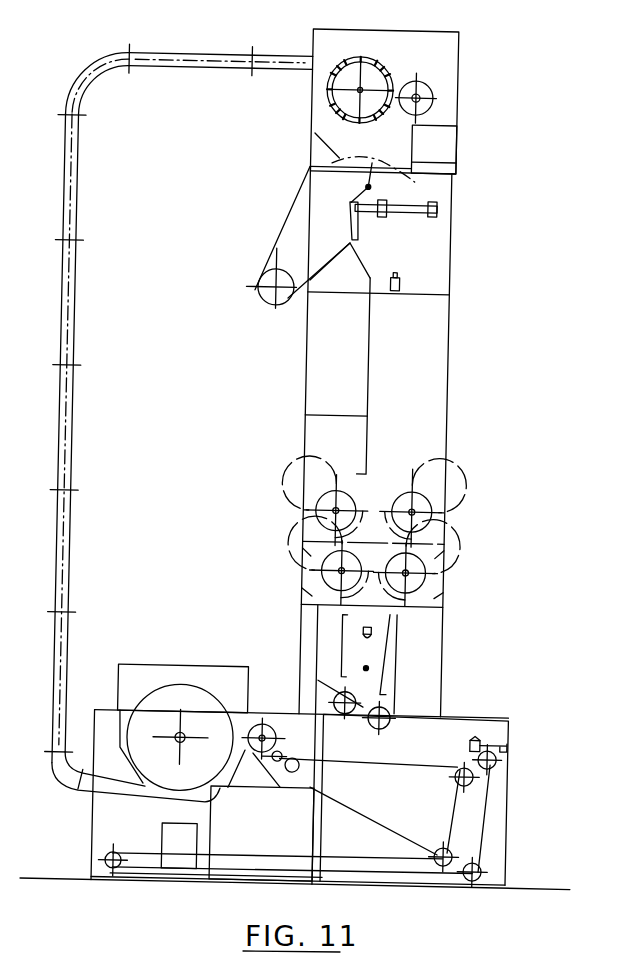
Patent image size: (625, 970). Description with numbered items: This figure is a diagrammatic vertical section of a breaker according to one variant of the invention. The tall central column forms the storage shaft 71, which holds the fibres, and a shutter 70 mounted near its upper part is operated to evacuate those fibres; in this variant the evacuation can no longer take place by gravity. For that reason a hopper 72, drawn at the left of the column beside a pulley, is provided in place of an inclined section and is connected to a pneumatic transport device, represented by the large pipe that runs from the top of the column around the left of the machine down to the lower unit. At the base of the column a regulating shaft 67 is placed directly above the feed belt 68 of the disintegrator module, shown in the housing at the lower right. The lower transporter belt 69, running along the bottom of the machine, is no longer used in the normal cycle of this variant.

The regulating shaft 67 is at (374, 665).
The feed belt 68 is at (430, 760).
The lower transporter belt 69 is at (395, 860).
The shutter 70 is at (363, 186).
The storage shaft 71 is at (388, 376).
The hopper 72 is at (280, 246).